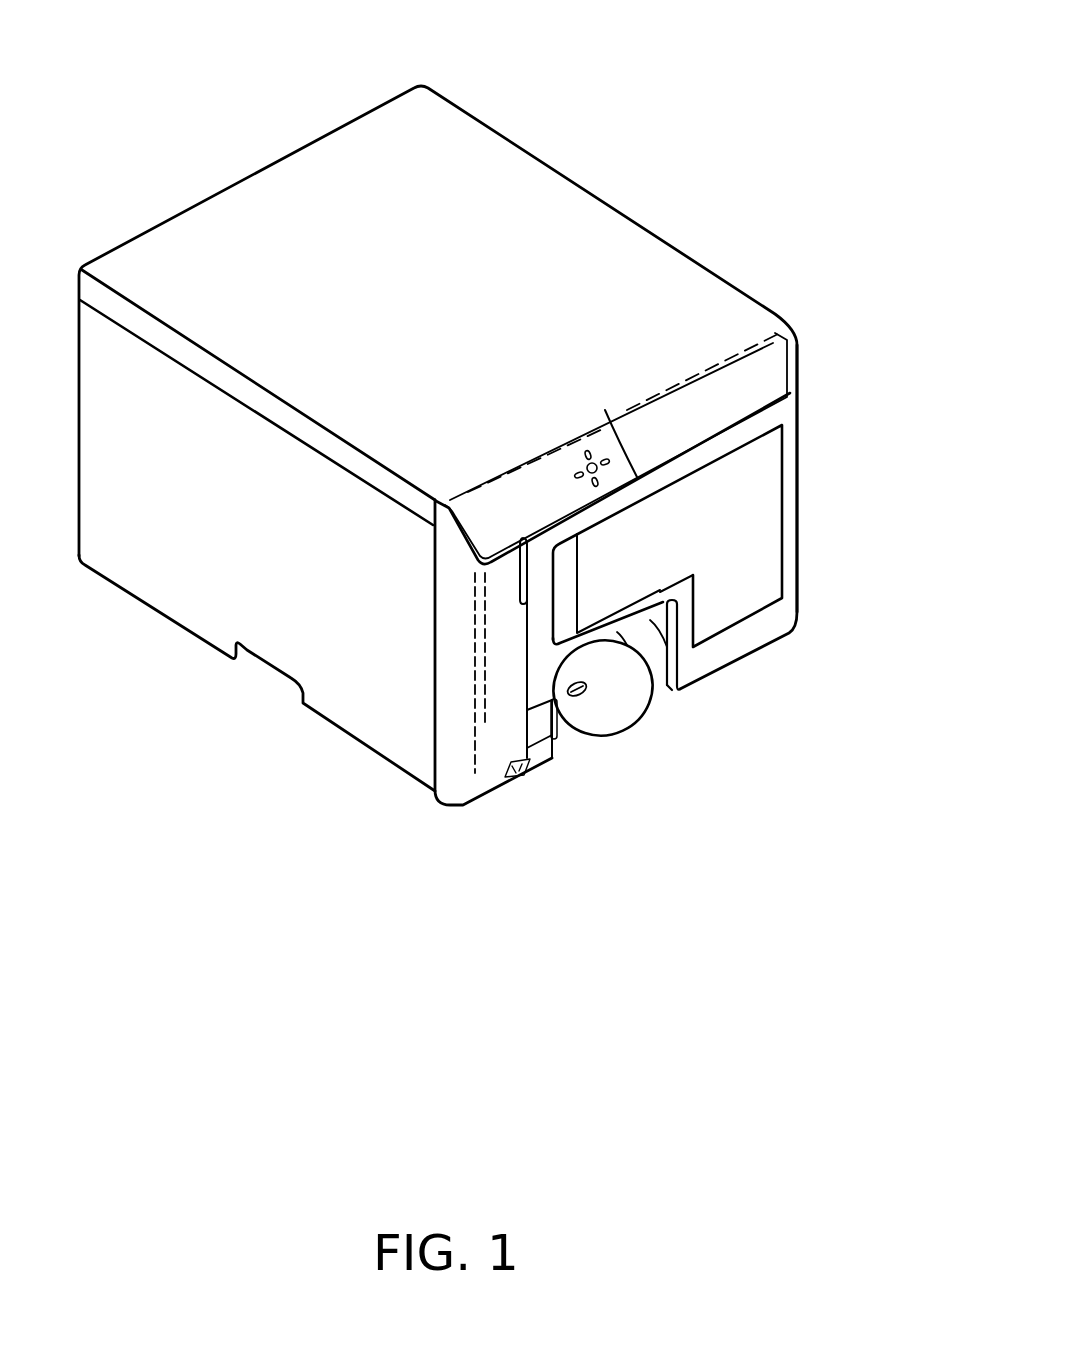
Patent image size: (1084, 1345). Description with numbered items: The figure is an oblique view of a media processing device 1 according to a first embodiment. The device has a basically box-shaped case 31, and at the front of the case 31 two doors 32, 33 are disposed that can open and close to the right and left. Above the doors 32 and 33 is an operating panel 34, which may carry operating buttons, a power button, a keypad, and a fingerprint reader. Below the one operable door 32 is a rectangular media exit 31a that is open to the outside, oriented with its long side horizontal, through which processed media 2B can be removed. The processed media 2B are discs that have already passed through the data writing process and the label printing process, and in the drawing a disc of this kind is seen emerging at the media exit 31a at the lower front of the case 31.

The media processing device 1 is at (617, 126).
The case 31 is at (671, 226).
The media exit 31a is at (678, 630).
The door 32 is at (764, 517).
The door 33 is at (490, 736).
The operating panel 34 is at (475, 529).
The processed media 2B is at (620, 707).